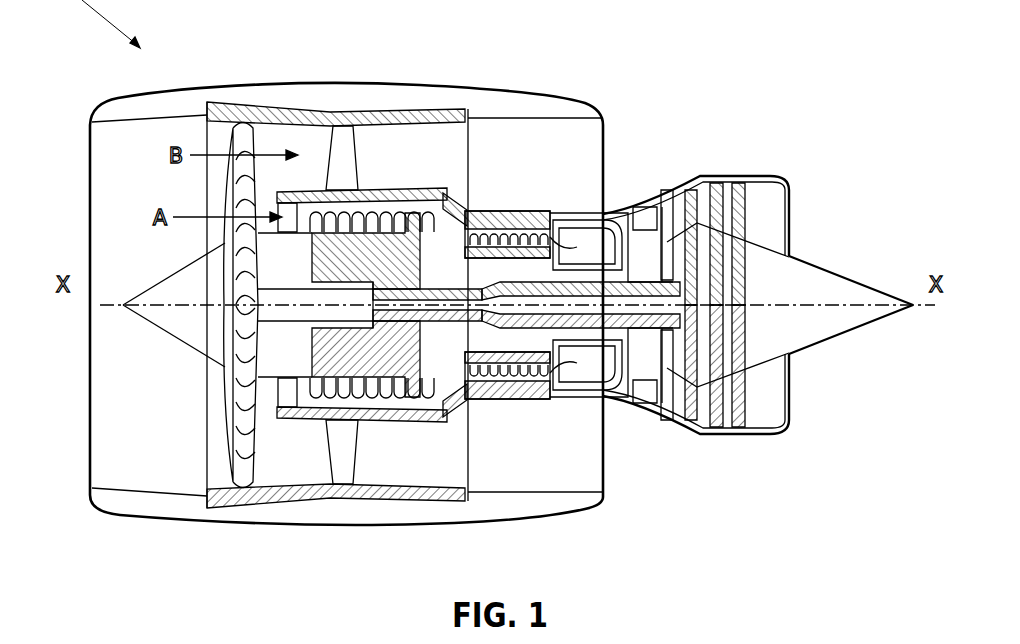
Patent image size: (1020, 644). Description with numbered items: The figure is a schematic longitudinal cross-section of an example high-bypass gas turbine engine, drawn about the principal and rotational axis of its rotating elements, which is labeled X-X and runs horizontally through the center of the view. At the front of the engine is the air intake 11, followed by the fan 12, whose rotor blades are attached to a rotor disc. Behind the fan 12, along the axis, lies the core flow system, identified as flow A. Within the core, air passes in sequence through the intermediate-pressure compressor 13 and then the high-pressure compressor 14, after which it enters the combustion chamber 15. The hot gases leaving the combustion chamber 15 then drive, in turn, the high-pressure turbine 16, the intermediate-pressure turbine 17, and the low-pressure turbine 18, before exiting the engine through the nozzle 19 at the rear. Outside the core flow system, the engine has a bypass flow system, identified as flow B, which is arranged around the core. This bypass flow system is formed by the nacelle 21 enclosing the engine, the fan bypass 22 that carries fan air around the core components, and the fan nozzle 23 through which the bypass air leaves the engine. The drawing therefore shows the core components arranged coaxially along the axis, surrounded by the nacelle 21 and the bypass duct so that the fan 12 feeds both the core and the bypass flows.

The air intake 11 is at (147, 122).
The fan 12 is at (226, 446).
The intermediate-pressure compressor 13 is at (392, 420).
The high-pressure compressor 14 is at (500, 236).
The combustion chamber 15 is at (568, 378).
The high-pressure turbine 16 is at (620, 400).
The intermediate-pressure turbine 17 is at (660, 192).
The low-pressure turbine 18 is at (678, 426).
The nozzle 19 is at (784, 177).
The nacelle 21 is at (386, 103).
The fan bypass 22 is at (552, 161).
The fan nozzle 23 is at (605, 110).